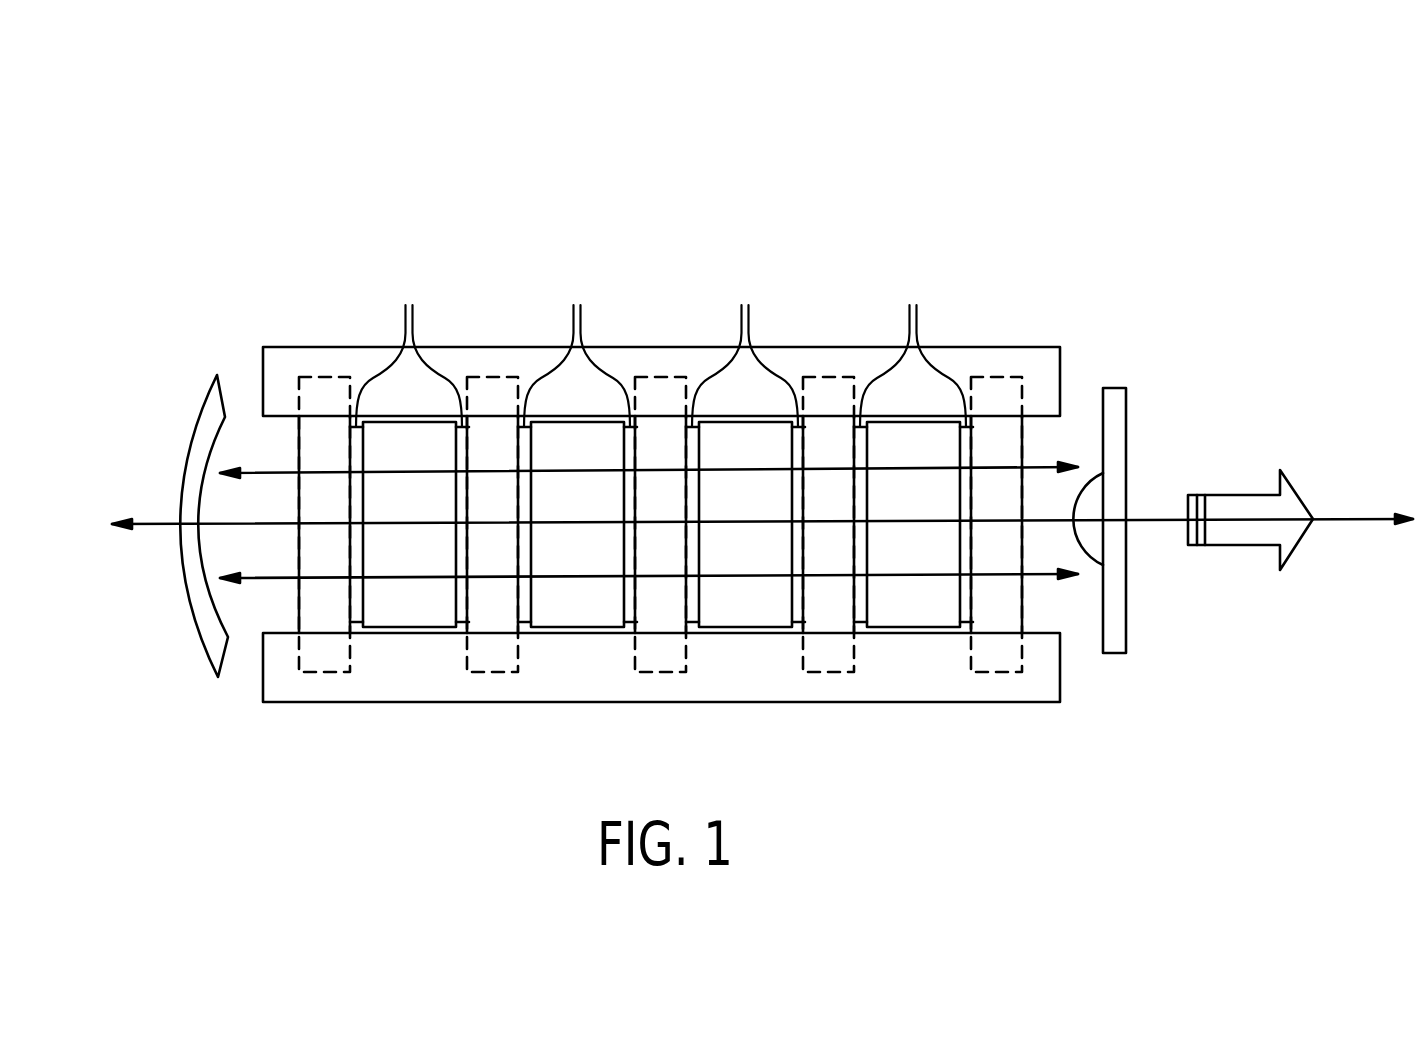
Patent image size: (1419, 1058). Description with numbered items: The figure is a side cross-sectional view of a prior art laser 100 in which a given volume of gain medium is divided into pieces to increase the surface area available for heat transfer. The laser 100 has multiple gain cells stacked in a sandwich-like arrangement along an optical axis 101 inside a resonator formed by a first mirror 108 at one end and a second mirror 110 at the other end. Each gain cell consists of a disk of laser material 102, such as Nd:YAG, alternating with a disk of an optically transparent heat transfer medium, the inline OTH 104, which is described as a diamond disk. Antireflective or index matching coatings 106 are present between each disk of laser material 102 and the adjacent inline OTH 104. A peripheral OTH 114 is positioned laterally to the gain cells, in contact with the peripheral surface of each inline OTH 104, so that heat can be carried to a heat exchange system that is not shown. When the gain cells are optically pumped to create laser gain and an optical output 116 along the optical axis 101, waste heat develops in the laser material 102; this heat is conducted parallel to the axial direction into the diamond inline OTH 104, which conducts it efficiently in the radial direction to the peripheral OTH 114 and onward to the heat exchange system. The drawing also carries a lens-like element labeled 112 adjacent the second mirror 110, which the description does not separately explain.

The prior art laser 100 is at (200, 142).
The optical axis 101 is at (1350, 518).
The disk of laser material 102 is at (413, 628).
The inline optically transparent heat transfer medium (inline OTH) 104 is at (325, 618).
The antireflective or index matching coatings 106 is at (661, 347).
The first mirror 108 is at (190, 432).
The second mirror 110 is at (1127, 610).
The lens 112 is at (1043, 463).
The peripheral OTH 114 is at (1003, 345).
The optical output 116 is at (1228, 495).